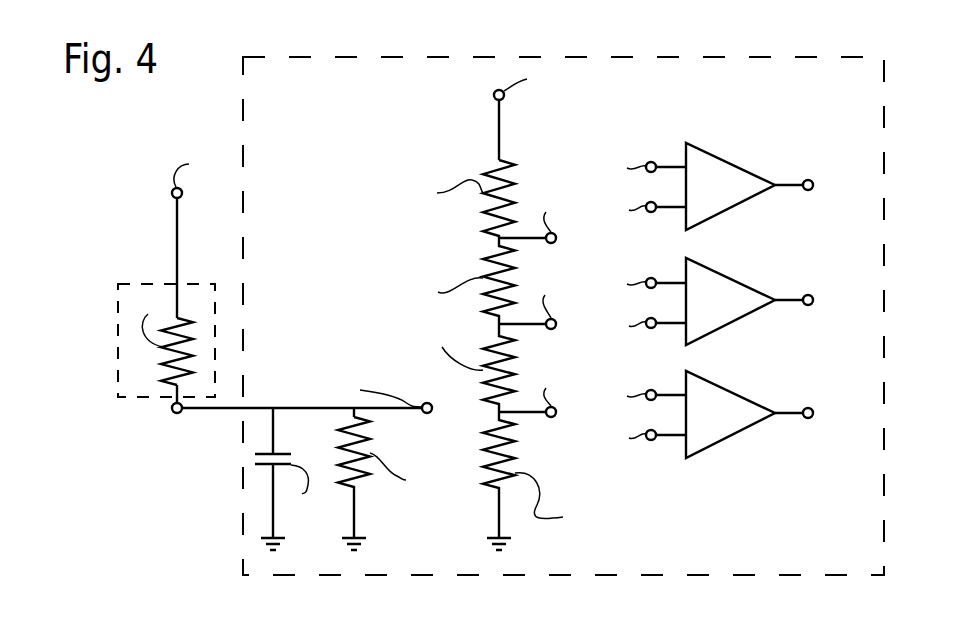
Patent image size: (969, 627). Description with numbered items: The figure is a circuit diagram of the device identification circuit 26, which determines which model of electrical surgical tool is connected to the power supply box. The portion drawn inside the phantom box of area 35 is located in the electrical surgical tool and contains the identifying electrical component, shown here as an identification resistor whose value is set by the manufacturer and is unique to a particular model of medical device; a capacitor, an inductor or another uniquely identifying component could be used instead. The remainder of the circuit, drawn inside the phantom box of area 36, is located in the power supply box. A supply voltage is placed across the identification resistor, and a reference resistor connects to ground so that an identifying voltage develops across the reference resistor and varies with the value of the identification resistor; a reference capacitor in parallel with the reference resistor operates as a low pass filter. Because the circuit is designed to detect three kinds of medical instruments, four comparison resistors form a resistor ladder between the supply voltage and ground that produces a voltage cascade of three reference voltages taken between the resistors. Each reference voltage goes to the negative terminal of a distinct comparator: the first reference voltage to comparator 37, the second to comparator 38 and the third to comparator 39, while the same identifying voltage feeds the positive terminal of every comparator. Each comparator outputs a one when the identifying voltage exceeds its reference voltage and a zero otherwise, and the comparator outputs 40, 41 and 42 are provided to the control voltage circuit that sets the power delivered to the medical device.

The device identification circuit 26 is at (117, 482).
The area 35 is at (118, 333).
The area 36 is at (242, 527).
The comparator 37 is at (723, 182).
The comparator 38 is at (727, 298).
The comparator 39 is at (735, 410).
The output of comparator 40 is at (814, 185).
The output of comparator 41 is at (814, 300).
The output of comparator 42 is at (814, 413).